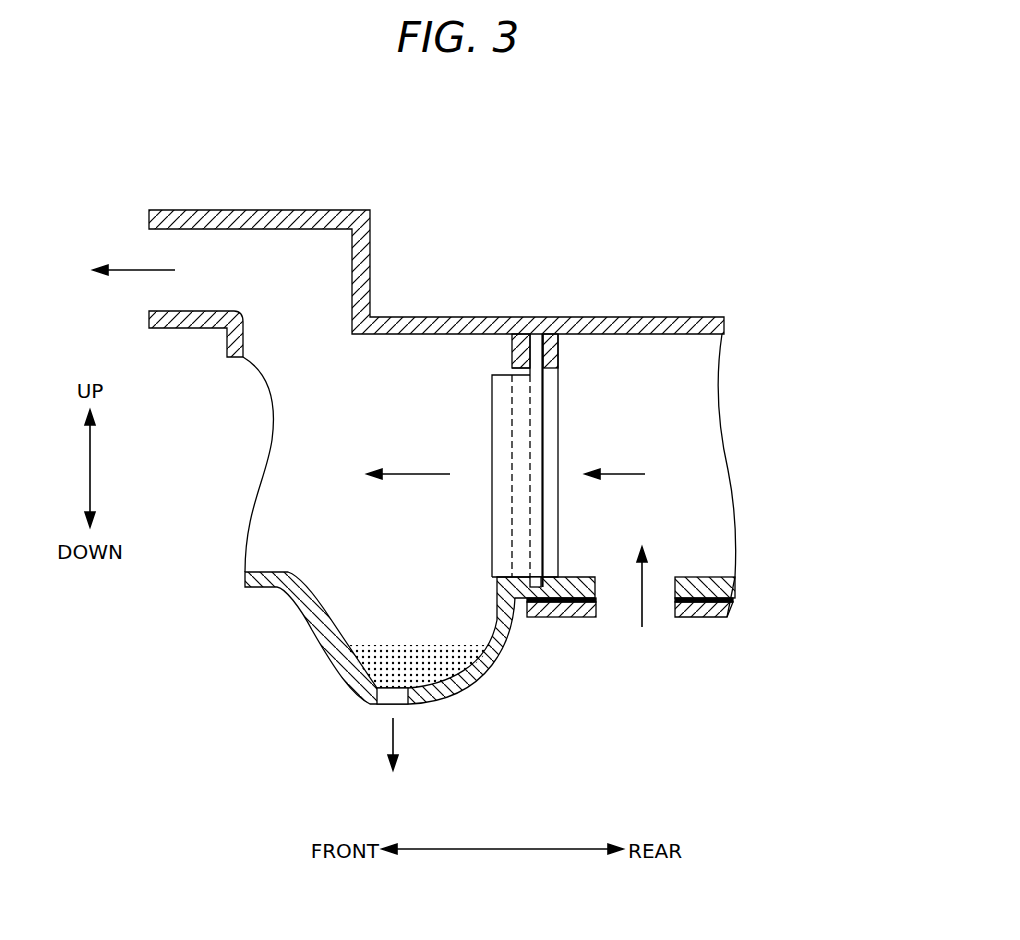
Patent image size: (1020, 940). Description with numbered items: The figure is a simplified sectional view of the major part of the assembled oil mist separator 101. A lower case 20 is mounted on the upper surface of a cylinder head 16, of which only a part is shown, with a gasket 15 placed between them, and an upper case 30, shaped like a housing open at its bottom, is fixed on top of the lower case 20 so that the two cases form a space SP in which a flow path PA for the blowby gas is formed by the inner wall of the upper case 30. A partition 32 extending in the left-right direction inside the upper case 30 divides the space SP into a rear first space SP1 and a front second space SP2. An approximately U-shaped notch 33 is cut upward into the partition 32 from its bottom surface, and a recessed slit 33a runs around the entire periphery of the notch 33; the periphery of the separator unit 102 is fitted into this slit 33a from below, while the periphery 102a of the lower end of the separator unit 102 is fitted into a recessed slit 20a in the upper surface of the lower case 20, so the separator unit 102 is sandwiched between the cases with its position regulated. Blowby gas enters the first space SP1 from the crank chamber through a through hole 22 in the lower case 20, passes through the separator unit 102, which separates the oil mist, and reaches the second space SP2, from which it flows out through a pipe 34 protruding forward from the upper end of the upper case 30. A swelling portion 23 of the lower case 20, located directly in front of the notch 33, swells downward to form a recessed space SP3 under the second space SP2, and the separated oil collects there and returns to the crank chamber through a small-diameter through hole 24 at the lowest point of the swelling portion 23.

The oil mist separator 101 is at (787, 276).
The upper case 30 is at (706, 317).
The pipe 34 is at (165, 328).
The partition 32 is at (560, 356).
The notch 33 is at (562, 376).
The slit 33a is at (536, 458).
The separator unit 102 is at (492, 414).
The periphery of the lower end of the separator unit 102a is at (535, 343).
The lower case 20 is at (705, 577).
The slit 20a is at (548, 573).
The gasket 15 is at (697, 617).
The cylinder head 16 is at (566, 617).
The through hole 22 is at (597, 584).
The swelling portion 23 is at (340, 680).
The through hole 24 is at (400, 692).
The space SP is at (483, 356).
The first space SP1 is at (686, 382).
The second space SP2 is at (290, 575).
The recessed space SP3 is at (440, 668).
The flow path PA is at (707, 506).